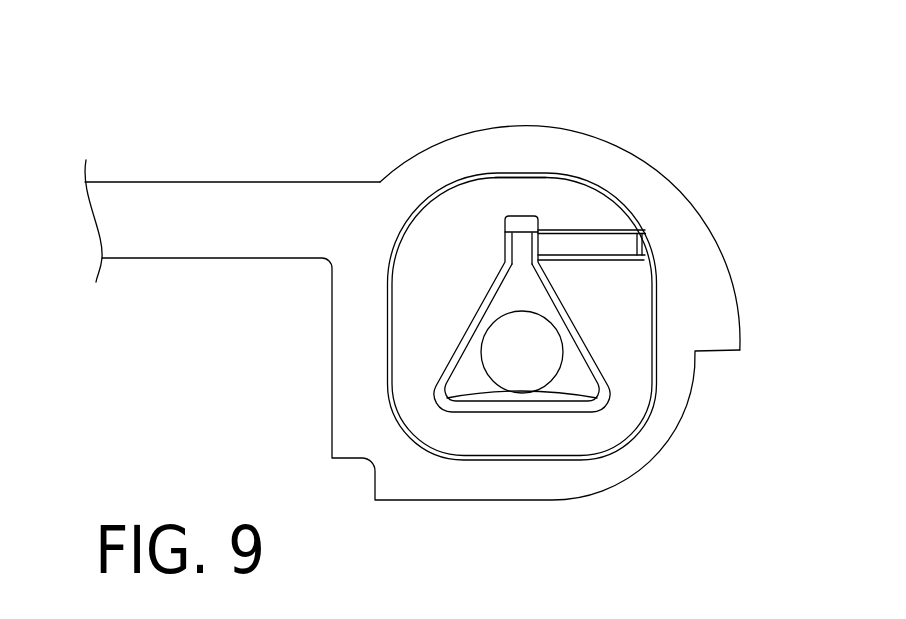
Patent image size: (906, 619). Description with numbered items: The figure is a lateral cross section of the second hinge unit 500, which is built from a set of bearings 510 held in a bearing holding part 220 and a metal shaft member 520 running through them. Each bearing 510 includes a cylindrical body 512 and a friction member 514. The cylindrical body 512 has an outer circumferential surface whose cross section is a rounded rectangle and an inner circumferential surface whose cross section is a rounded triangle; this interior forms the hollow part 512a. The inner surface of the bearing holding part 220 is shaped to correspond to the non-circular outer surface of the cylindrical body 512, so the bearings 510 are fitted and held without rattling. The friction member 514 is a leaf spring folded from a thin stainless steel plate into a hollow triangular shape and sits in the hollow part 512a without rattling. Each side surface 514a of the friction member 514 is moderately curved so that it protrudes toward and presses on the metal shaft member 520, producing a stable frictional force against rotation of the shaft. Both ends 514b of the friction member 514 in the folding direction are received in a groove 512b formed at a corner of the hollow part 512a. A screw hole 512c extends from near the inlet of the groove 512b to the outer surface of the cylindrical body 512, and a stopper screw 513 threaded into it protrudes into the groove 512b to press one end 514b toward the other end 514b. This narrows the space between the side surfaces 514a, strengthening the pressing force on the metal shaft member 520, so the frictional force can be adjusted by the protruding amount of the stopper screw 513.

The second hinge unit 500 is at (647, 108).
The bearing holding part 220 is at (537, 125).
The bearing 510 is at (656, 396).
The cylindrical body 512 is at (420, 277).
The hollow part 512a is at (463, 337).
The groove 512b is at (502, 220).
The screw hole 512c is at (645, 245).
The stopper screw 513 is at (580, 243).
The friction member 514 is at (506, 330).
The side surface 514a is at (555, 403).
The end 514b is at (503, 247).
The metal shaft member 520 is at (513, 365).